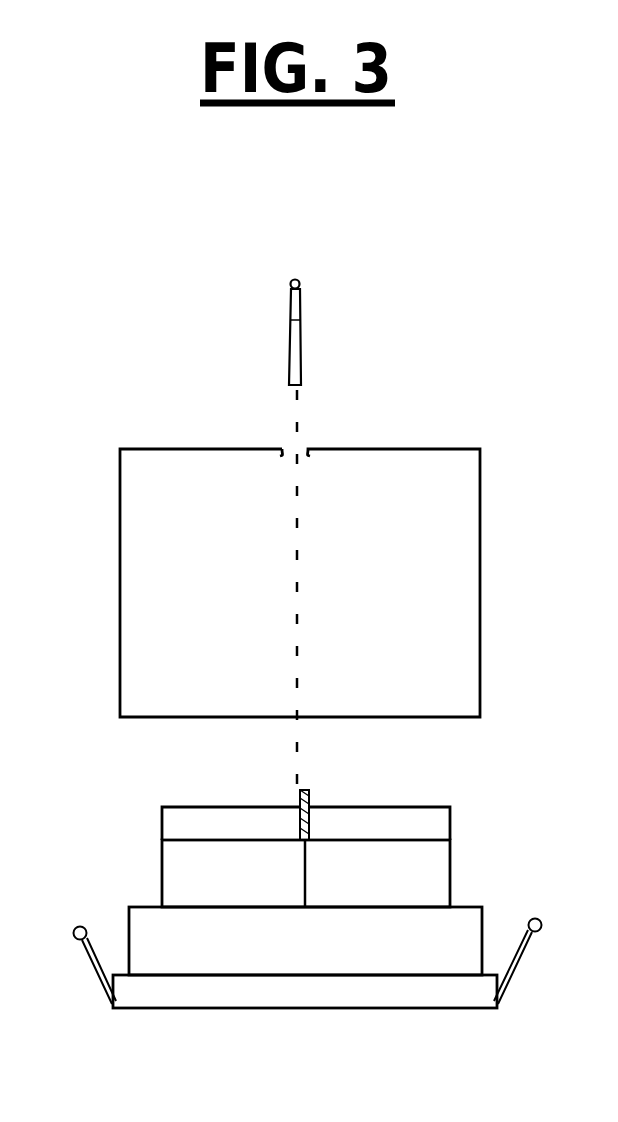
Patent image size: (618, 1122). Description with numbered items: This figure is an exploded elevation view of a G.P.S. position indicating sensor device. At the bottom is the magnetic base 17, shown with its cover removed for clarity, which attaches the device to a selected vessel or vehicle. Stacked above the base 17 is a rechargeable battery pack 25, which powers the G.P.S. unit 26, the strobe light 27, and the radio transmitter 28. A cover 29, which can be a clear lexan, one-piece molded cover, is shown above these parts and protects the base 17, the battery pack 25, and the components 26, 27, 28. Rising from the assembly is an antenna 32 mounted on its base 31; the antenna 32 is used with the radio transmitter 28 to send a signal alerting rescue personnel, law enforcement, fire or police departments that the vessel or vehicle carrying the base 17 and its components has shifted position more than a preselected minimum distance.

The magnetic base 17 is at (128, 1003).
The rechargeable battery pack 25 is at (318, 959).
The G.P.S. unit 26 is at (160, 862).
The strobe light 27 is at (220, 818).
The radio transmitter 28 is at (373, 820).
The cover 29 is at (138, 606).
The antenna base 31 is at (308, 800).
The antenna 32 is at (291, 320).